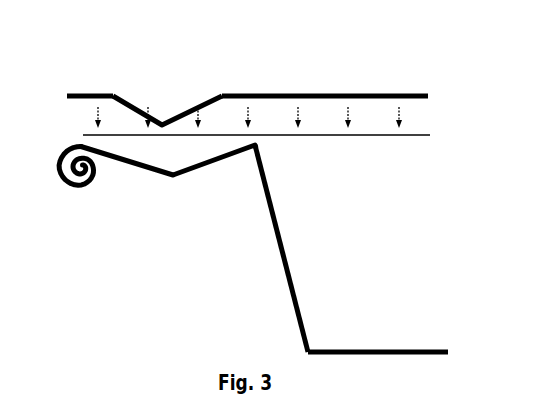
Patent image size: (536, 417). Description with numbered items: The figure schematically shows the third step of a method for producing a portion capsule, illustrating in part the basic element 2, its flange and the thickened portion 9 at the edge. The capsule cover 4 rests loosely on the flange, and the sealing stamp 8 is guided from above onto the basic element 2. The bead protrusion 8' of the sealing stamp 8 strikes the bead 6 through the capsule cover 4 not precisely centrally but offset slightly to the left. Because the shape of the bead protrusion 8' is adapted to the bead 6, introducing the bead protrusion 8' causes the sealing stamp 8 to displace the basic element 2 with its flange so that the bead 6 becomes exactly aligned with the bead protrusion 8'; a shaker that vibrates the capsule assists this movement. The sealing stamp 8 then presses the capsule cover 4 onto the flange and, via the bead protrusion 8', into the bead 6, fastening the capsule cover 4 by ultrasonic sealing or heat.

The basic element 2 is at (298, 292).
The capsule cover 4 is at (380, 136).
The bead 6 is at (180, 178).
The sealing stamp 8 is at (247, 50).
The bead protrusion 8' is at (167, 70).
The thickened portion 9 is at (72, 188).